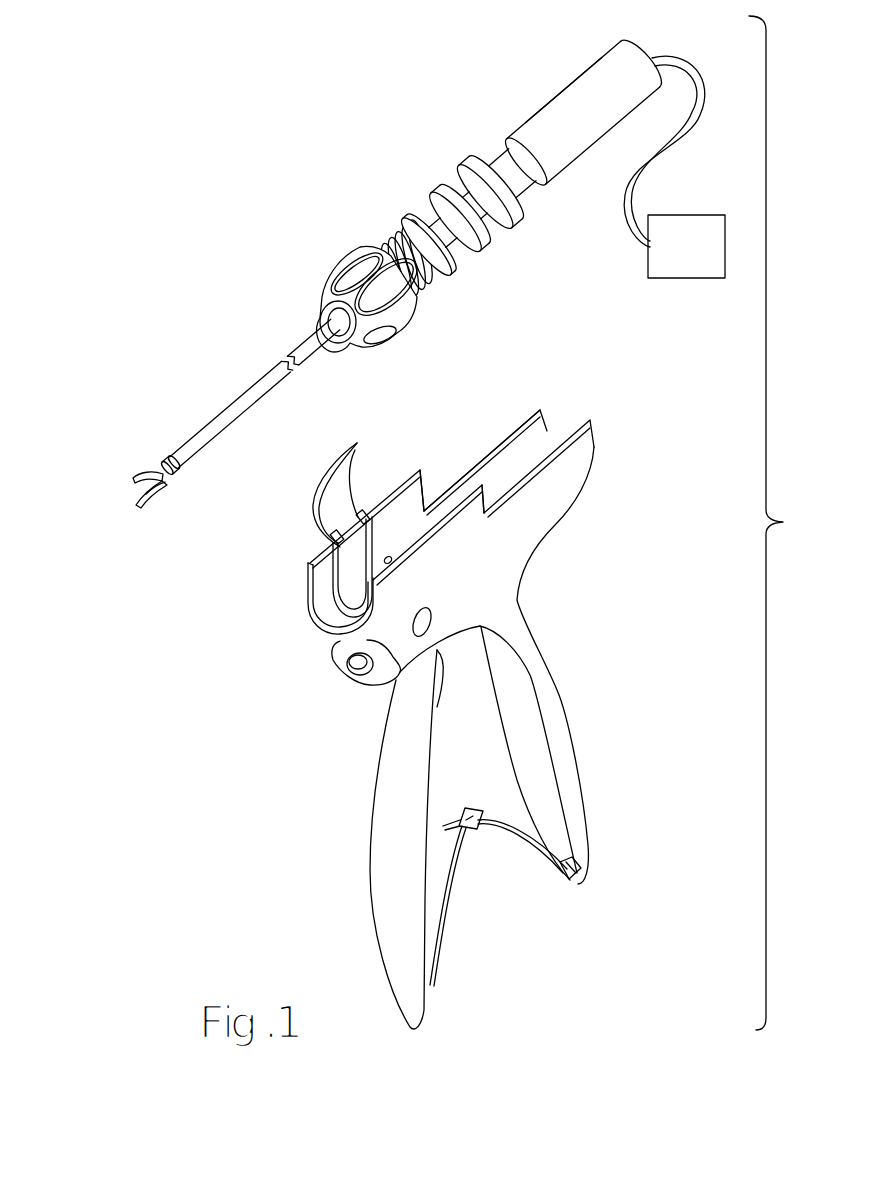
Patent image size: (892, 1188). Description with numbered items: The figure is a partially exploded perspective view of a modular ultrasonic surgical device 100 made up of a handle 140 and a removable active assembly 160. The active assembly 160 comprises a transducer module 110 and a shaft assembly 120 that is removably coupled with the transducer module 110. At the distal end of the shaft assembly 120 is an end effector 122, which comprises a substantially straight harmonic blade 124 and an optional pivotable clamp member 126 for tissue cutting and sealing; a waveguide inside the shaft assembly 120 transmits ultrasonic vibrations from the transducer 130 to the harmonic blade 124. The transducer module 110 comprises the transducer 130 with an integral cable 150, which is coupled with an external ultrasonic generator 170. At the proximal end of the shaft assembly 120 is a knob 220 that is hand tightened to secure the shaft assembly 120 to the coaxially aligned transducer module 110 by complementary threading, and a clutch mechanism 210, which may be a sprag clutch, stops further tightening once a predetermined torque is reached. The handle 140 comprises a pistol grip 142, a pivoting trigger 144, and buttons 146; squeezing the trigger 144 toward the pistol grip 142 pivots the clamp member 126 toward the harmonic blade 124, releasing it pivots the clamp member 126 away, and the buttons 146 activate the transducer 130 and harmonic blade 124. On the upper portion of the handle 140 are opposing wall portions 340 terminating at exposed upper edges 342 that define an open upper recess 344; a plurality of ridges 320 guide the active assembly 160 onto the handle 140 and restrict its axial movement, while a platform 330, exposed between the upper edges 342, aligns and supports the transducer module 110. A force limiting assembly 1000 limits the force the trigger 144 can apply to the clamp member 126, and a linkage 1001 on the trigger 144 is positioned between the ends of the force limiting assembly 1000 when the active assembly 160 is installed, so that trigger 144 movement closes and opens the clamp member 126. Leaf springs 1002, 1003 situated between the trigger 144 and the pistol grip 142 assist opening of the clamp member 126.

The ultrasonic surgical device 100 is at (260, 930).
The transducer module 110 is at (548, 86).
The shaft assembly 120 is at (270, 416).
The end effector 122 is at (150, 440).
The harmonic blade 124 is at (144, 500).
The pivotable clamp member 126 is at (141, 468).
The transducer 130 is at (595, 125).
The handle 140 is at (608, 791).
The pistol grip 142 is at (582, 840).
The pivoting trigger 144 is at (380, 826).
The buttons 146 is at (360, 674).
The cable 150 is at (686, 52).
The active assembly 160 is at (258, 128).
The ultrasonic generator 170 is at (690, 218).
The clutch mechanism 210 is at (482, 259).
The knob 220 is at (347, 272).
The ridges 320 is at (340, 560).
The platform 330 is at (548, 435).
The opposing wall portions 340 is at (308, 583).
The upper edges 342 is at (535, 462).
The upper recess 344 is at (528, 437).
The force limiting assembly 1000 is at (376, 211).
The linkage 1001 is at (377, 559).
The leaf spring 1002 is at (455, 900).
The leaf spring 1003 is at (500, 788).